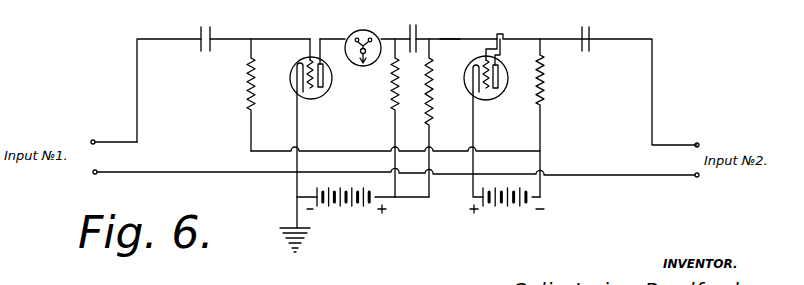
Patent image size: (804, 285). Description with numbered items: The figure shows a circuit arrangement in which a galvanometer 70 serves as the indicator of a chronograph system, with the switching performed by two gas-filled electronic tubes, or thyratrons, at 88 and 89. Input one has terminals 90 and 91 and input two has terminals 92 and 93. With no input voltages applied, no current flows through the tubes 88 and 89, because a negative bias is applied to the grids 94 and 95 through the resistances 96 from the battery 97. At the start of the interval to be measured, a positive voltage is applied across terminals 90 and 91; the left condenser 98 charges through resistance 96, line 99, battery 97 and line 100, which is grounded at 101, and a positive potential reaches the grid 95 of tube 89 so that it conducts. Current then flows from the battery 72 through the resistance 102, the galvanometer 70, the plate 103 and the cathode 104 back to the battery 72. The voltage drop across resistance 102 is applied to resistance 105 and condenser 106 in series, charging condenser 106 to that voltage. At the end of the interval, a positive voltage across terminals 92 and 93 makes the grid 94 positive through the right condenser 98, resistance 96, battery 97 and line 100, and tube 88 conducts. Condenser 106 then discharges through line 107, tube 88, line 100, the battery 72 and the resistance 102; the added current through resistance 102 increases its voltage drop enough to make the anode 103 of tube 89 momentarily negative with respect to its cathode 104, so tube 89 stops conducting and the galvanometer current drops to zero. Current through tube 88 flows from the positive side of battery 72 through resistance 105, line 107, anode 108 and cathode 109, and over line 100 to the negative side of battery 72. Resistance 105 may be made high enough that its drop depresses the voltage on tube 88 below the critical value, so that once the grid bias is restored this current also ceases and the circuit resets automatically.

The galvanometer 70 is at (370, 37).
The battery 72 is at (345, 208).
The electronic tube 88 is at (487, 71).
The electronic tube 89 is at (312, 67).
The terminal 90 is at (92, 140).
The terminal 91 is at (93, 173).
The terminal 92 is at (699, 144).
The terminal 93 is at (699, 177).
The grid 94 is at (486, 90).
The grid 95 is at (311, 90).
The resistance 96 is at (248, 65).
The battery 97 is at (506, 210).
The condenser 98 is at (211, 34).
The line 99 is at (335, 151).
The line 100 is at (357, 164).
The ground 101 is at (289, 256).
The resistance 102 is at (391, 90).
The plate 103 is at (323, 80).
The cathode 104 is at (299, 78).
The resistance 105 is at (434, 68).
The condenser 106 is at (416, 37).
The line 107 is at (458, 38).
The anode 108 is at (498, 80).
The cathode 109 is at (474, 78).